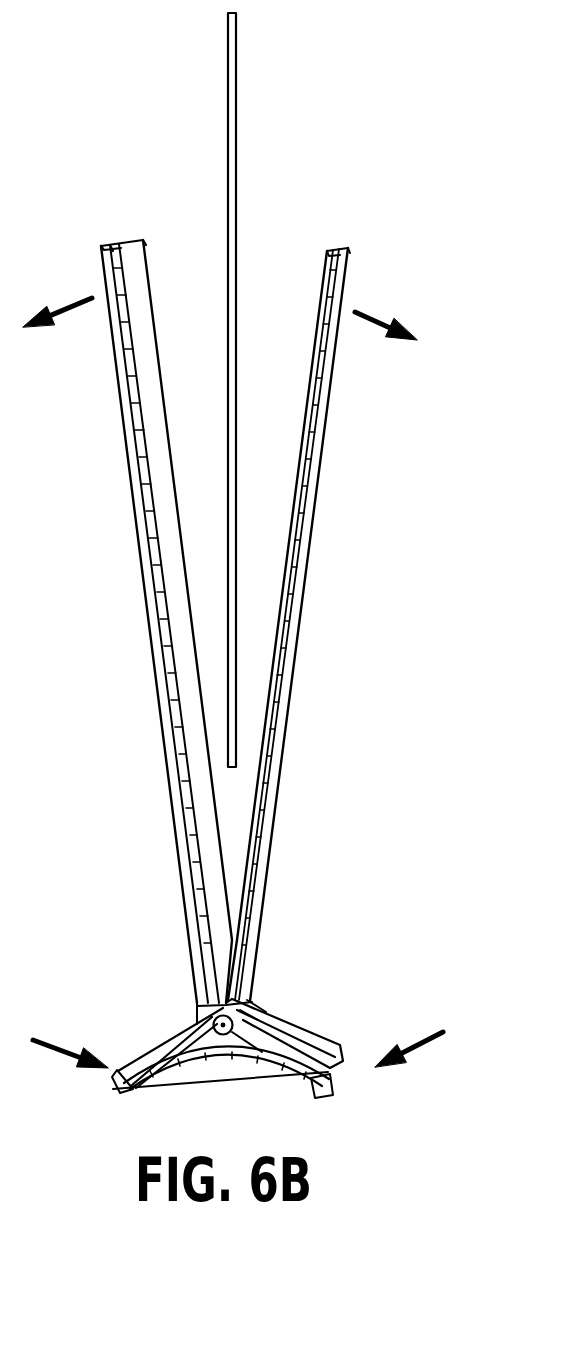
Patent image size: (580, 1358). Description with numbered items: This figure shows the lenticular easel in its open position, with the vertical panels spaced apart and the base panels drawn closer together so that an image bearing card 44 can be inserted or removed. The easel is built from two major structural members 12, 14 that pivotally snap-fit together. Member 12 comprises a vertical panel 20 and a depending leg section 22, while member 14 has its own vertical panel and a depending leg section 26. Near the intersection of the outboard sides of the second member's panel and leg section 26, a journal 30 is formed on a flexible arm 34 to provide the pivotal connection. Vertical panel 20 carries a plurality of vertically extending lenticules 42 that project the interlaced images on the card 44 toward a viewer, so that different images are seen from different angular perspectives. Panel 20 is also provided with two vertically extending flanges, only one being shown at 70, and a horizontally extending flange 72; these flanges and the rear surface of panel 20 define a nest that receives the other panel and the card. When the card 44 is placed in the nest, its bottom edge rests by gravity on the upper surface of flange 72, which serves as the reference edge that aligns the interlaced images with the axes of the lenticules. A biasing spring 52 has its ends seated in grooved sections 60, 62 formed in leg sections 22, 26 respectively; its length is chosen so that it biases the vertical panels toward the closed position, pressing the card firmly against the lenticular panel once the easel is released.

The major structural member 12 is at (143, 597).
The major structural member 14 is at (351, 234).
The vertical panel 20 is at (125, 268).
The vertically extending flange 70 is at (148, 383).
The lenticules 42 is at (139, 535).
The image carrying card 44 is at (236, 147).
The horizontally extending flange 72 is at (225, 1000).
The flexible arm 34 is at (243, 1030).
The leg section 26 is at (320, 1049).
The leg section 22 is at (161, 1064).
The grooved section 60 is at (113, 1088).
The grooved section 62 is at (334, 1079).
The journal 30 is at (223, 1027).
The biasing spring 52 is at (243, 1057).